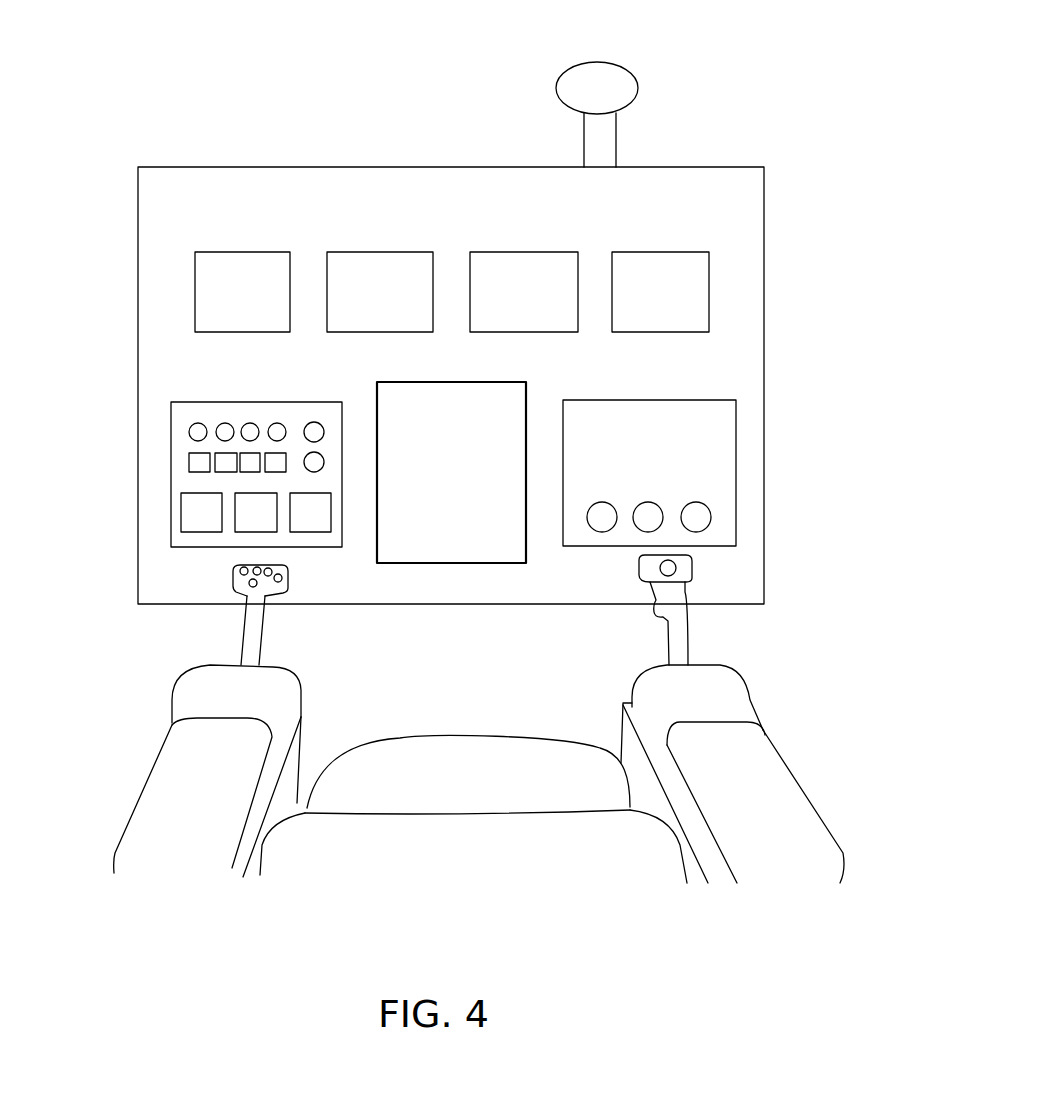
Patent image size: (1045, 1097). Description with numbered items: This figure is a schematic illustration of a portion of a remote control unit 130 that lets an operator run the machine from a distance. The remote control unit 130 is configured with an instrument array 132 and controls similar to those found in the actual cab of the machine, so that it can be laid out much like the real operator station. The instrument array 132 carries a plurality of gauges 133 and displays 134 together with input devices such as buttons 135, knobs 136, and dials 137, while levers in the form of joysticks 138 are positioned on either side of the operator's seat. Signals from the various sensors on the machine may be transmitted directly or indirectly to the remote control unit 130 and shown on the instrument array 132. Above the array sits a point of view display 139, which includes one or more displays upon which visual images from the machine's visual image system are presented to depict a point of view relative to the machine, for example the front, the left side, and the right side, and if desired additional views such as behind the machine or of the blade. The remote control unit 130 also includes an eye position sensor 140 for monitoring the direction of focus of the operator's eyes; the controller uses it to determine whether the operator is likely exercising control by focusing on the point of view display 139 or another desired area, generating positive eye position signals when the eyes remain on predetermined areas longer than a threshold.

The remote control unit 130 is at (338, 894).
The instrument array 132 is at (112, 172).
The gauges 133 is at (696, 512).
The displays 134 is at (312, 514).
The buttons 135 is at (275, 462).
The knobs 136 is at (277, 423).
The dials 137 is at (316, 460).
The joysticks 138 is at (266, 590).
The point of view display 139 is at (648, 278).
The eye position sensor 140 is at (639, 88).